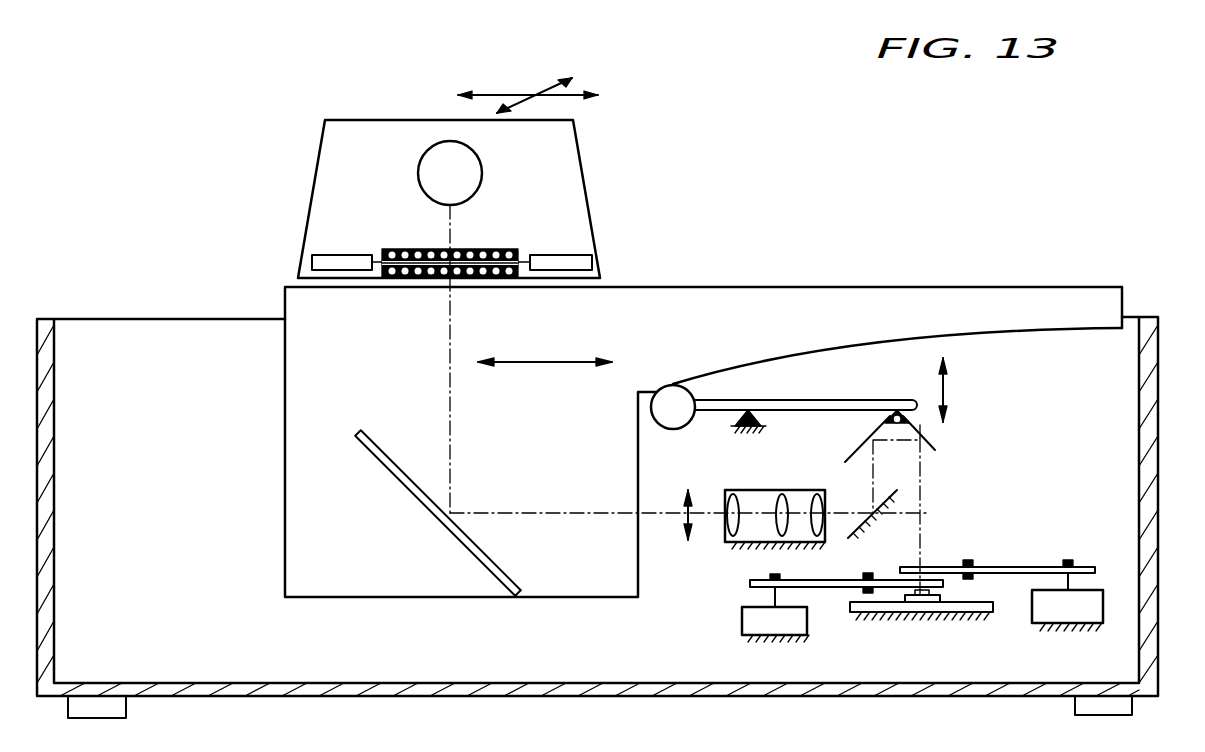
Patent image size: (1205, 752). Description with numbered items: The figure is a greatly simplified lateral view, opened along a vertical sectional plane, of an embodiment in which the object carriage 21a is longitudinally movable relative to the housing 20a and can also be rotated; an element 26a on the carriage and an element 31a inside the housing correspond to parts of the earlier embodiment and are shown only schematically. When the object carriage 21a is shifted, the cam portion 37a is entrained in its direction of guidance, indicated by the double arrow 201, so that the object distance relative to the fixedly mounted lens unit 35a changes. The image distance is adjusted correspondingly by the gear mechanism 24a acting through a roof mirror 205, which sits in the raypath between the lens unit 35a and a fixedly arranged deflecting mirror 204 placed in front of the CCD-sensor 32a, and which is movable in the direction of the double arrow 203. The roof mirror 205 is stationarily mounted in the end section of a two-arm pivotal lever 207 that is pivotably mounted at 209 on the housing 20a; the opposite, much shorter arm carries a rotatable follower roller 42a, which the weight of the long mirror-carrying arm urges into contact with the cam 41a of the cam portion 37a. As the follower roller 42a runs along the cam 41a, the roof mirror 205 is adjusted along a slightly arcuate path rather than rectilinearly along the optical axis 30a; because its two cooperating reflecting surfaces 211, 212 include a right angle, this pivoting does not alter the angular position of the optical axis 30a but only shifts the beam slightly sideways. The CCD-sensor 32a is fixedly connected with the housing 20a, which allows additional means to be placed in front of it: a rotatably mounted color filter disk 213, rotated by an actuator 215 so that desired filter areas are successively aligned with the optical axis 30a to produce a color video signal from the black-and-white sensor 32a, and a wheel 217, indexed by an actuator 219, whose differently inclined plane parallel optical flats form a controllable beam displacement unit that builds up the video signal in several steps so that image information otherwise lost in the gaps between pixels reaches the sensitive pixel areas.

The housing 20a is at (1147, 312).
The object carriage 21a is at (591, 218).
The lamp 26a is at (430, 159).
The cam portion 37a is at (748, 313).
The cam 41a is at (747, 372).
The follower roller 42a is at (667, 388).
The double arrow 201 is at (537, 362).
The two-arm pivotal lever 207 is at (856, 400).
The pivotal mounting 209 is at (753, 400).
The double arrow 203 is at (946, 384).
The roof mirror 205 is at (935, 432).
The reflecting surface 212 is at (860, 463).
The reflecting surface 211 is at (930, 457).
The optical axis 30a is at (930, 513).
The mirror 31a is at (390, 478).
The lens unit 35a is at (760, 495).
The gear mechanism 24a is at (688, 535).
The deflecting mirror 204 is at (908, 503).
The color filter disk 213 is at (832, 590).
The actuator 215 is at (742, 626).
The wheel 217 is at (1015, 575).
The actuator 219 is at (1062, 627).
The CCD-sensor 32a is at (903, 615).